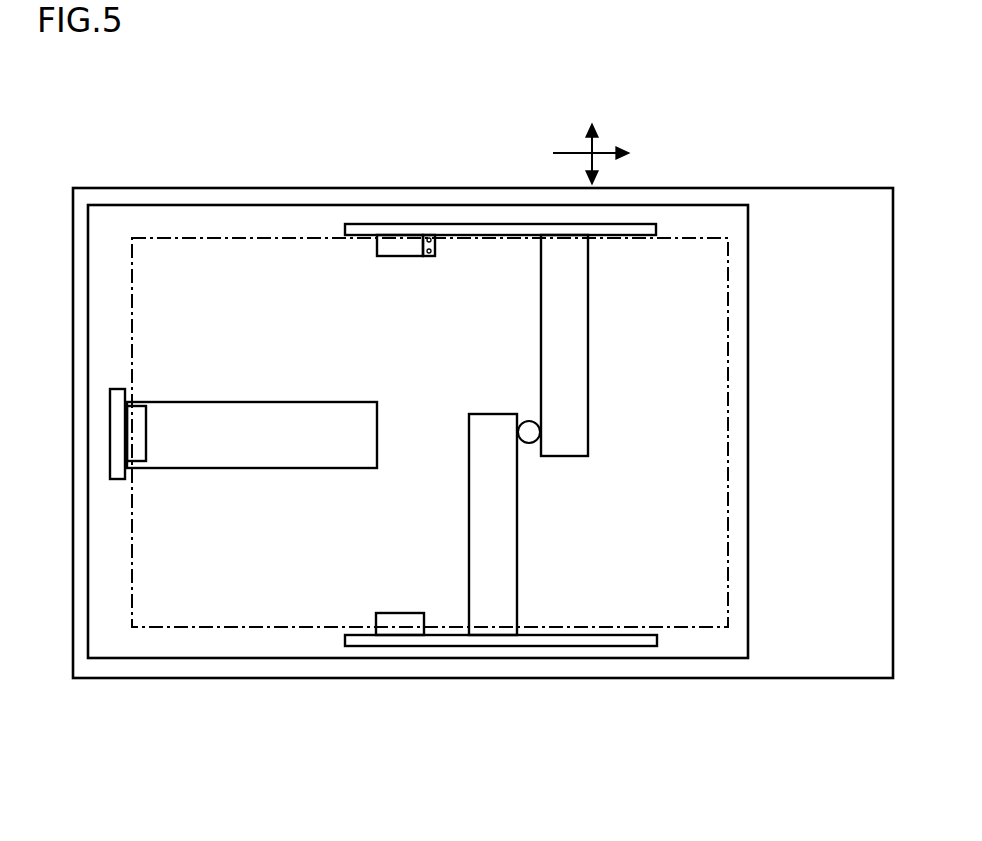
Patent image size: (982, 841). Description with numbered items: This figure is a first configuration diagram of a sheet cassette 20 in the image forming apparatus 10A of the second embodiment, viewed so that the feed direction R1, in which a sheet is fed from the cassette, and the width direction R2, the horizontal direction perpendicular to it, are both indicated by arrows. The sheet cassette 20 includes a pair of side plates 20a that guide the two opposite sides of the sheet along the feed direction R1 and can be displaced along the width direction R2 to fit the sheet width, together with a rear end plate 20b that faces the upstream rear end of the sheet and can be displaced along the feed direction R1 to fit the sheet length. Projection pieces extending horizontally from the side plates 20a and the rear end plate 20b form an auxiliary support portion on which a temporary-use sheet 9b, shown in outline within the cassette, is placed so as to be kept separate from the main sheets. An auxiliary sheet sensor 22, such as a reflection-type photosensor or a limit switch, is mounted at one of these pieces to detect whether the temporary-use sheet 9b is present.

The image forming apparatus 10A is at (80, 127).
The sheet cassette 20 is at (172, 187).
The side plates 20a is at (607, 237).
The rear end plate 20b is at (118, 388).
The auxiliary sheet sensor 22 is at (428, 257).
The temporary-use sheet 9b is at (250, 628).
The feed direction R1 is at (609, 154).
The width direction R2 is at (590, 143).